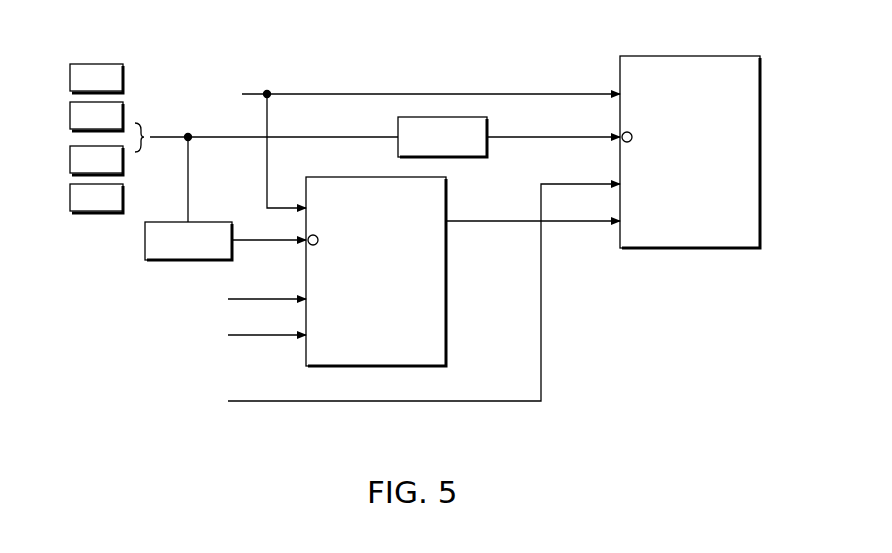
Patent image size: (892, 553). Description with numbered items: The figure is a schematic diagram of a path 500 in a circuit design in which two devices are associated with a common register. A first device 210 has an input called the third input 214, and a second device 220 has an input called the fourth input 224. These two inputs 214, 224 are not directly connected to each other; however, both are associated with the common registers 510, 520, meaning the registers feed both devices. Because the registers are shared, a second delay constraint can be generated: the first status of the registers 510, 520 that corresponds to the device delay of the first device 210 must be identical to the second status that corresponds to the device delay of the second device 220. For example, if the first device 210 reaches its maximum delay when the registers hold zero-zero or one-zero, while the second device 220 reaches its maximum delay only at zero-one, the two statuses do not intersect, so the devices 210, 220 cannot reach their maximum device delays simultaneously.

The path 500 is at (297, 33).
The common register 510 is at (69, 118).
The common register 520 is at (69, 160).
The first device 210 is at (447, 291).
The third input 214 is at (320, 242).
The second device 220 is at (762, 157).
The fourth input 224 is at (634, 138).